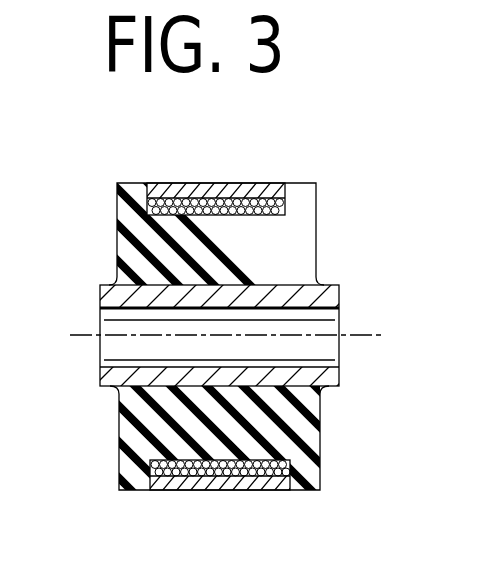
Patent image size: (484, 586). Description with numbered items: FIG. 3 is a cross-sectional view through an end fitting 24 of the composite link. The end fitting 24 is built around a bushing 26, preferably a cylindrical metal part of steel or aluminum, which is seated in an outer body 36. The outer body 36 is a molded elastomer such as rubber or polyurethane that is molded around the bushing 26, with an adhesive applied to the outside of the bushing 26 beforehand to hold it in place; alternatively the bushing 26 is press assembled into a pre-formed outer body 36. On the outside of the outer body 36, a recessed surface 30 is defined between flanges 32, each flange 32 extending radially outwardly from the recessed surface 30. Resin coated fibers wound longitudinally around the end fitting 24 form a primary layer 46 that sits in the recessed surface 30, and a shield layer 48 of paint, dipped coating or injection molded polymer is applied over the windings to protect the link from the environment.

The end fitting 24 is at (358, 208).
The bushing 26 is at (320, 377).
The recessed surface 30 is at (255, 218).
The flange 32 is at (133, 185).
The outer body 36 is at (277, 430).
The primary layer 46 is at (203, 205).
The shield layer 48 is at (253, 183).